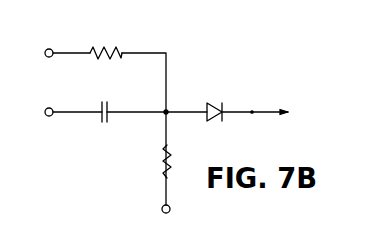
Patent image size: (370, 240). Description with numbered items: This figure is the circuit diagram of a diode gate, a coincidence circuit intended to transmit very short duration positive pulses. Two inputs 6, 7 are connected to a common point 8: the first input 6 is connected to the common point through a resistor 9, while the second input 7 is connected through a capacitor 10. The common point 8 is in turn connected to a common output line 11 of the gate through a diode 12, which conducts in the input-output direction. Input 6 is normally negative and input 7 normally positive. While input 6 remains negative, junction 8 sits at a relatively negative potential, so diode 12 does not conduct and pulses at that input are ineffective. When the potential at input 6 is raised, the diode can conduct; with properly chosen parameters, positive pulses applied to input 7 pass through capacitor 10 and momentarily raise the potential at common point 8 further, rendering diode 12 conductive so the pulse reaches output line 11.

The first input 6 is at (47, 49).
The second input 7 is at (47, 108).
The common point 8 is at (168, 110).
The resistor 9 is at (106, 50).
The capacitor 10 is at (102, 101).
The common output line 11 is at (252, 111).
The diode 12 is at (215, 104).